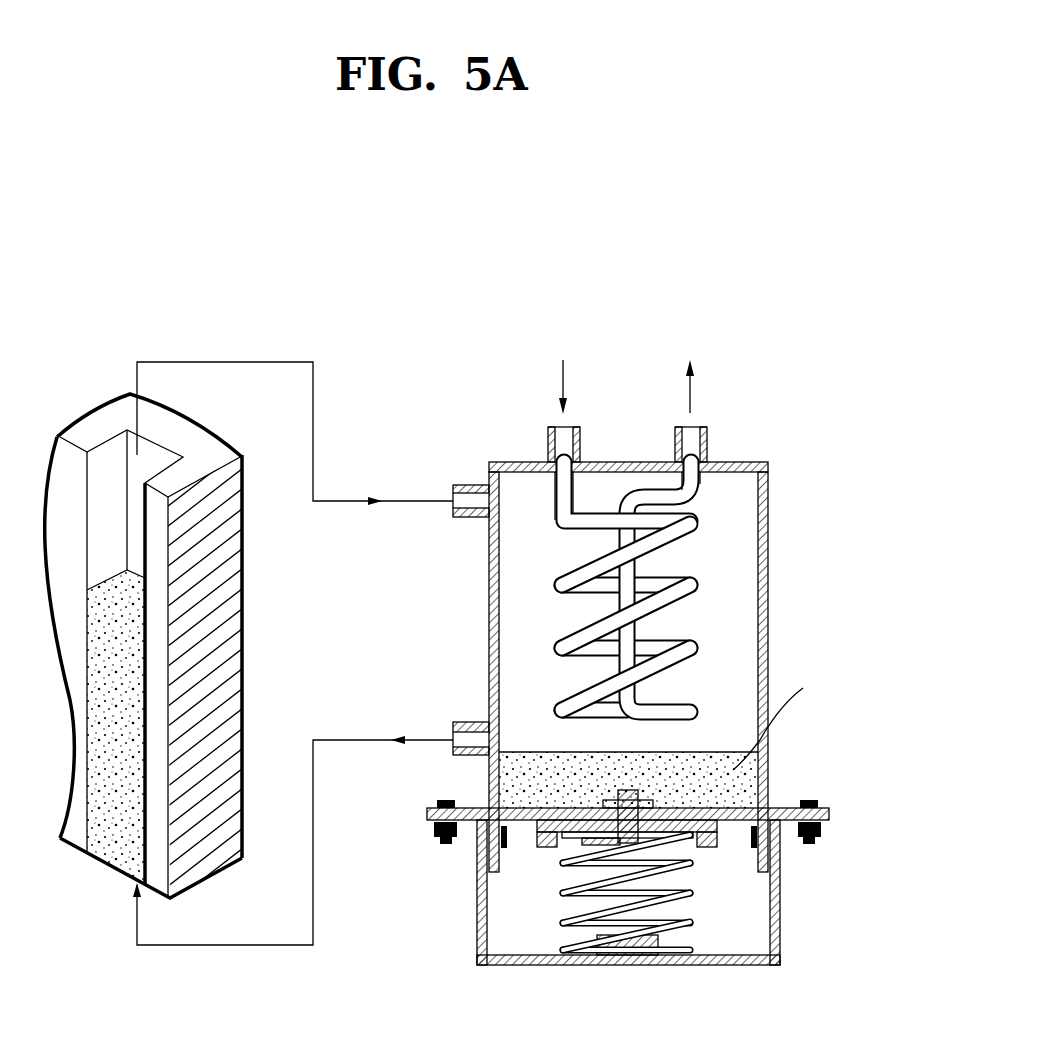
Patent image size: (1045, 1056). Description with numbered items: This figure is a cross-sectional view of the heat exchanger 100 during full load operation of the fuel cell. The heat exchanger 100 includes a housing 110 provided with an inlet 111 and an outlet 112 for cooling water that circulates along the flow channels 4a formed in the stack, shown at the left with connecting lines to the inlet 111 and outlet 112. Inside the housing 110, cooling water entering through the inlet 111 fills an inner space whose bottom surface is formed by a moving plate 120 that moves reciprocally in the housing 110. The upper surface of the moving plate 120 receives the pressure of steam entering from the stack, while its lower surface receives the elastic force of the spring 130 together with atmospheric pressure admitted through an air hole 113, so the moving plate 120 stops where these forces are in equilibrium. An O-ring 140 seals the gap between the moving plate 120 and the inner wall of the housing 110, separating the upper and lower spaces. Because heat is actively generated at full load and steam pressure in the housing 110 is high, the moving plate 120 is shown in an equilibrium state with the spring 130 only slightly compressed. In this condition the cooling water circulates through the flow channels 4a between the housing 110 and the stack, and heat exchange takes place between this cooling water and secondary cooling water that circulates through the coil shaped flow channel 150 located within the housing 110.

The flow channels 4a is at (110, 448).
The heat exchanger 100 is at (790, 400).
The housing 110 is at (488, 606).
The inlet 111 is at (460, 502).
The outlet 112 is at (456, 733).
The air hole 113 is at (545, 965).
The moving plate 120 is at (769, 797).
The spring 130 is at (630, 965).
The O-ring 140 is at (779, 842).
The coil shaped flow channel 150 is at (690, 525).